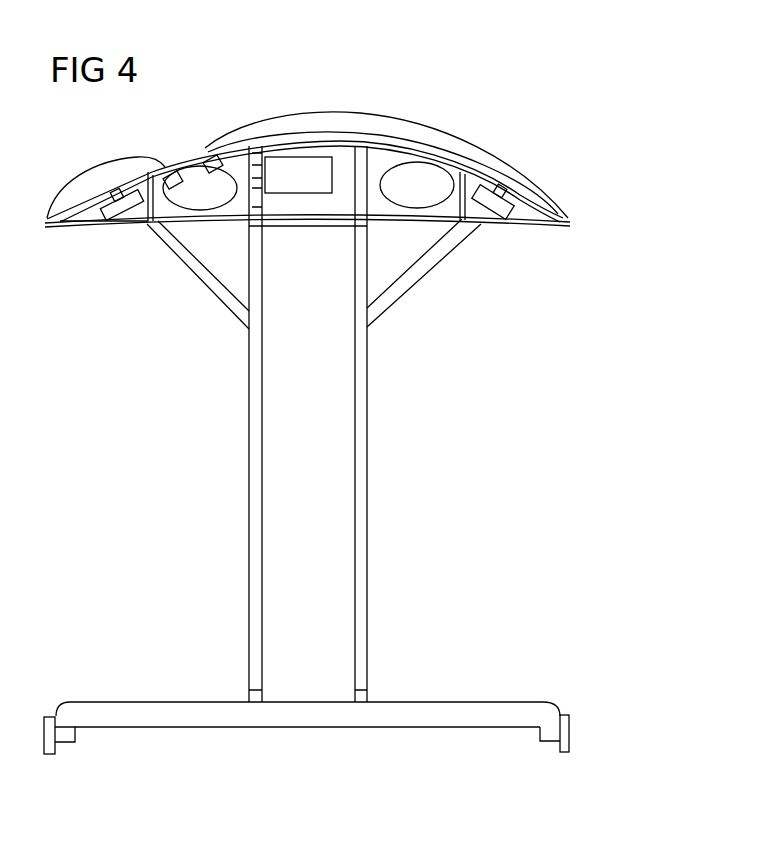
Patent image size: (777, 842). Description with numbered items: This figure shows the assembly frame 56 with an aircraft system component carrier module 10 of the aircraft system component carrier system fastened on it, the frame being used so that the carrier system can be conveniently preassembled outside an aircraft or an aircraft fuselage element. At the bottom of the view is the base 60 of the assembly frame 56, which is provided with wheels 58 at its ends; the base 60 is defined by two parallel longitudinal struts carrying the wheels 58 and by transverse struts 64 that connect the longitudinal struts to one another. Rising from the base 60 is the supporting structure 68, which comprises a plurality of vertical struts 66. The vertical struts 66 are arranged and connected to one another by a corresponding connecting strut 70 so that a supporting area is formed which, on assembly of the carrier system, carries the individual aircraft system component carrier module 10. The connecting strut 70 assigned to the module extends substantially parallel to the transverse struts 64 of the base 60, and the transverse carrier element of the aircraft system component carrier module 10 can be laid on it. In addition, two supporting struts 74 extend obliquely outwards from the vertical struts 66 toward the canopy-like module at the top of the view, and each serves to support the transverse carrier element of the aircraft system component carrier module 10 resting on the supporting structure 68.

The aircraft system component carrier module 10 is at (501, 128).
The assembly frame 56 is at (342, 465).
The wheels 58 is at (570, 733).
The base 60 is at (342, 698).
The transverse struts 64 is at (130, 719).
The vertical struts 66 is at (263, 481).
The supporting structure 68 is at (355, 424).
The connecting strut 70 is at (303, 224).
The supporting struts 74 is at (199, 268).